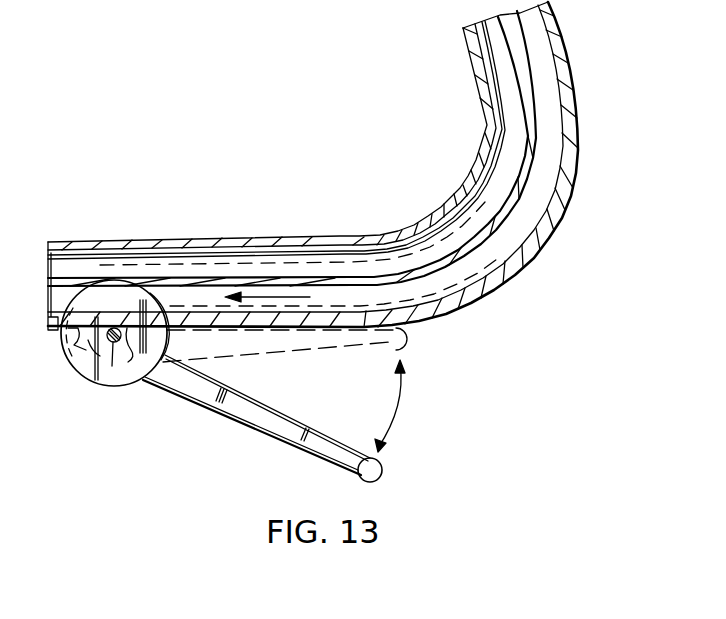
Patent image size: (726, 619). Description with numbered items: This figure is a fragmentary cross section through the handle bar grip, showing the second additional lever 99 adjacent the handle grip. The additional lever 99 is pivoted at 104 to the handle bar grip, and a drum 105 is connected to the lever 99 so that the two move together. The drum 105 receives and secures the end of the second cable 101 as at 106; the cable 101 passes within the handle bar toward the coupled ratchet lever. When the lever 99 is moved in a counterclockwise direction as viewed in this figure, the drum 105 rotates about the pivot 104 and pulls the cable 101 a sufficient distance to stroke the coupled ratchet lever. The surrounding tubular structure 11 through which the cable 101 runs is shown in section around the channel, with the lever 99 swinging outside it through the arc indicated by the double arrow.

The outer tubular sheath 11 is at (557, 148).
The second cable 101 is at (493, 226).
The cable end securing point 106 is at (90, 376).
The pivot 104 is at (113, 345).
The drum 105 is at (126, 372).
The second additional lever 99 is at (237, 407).